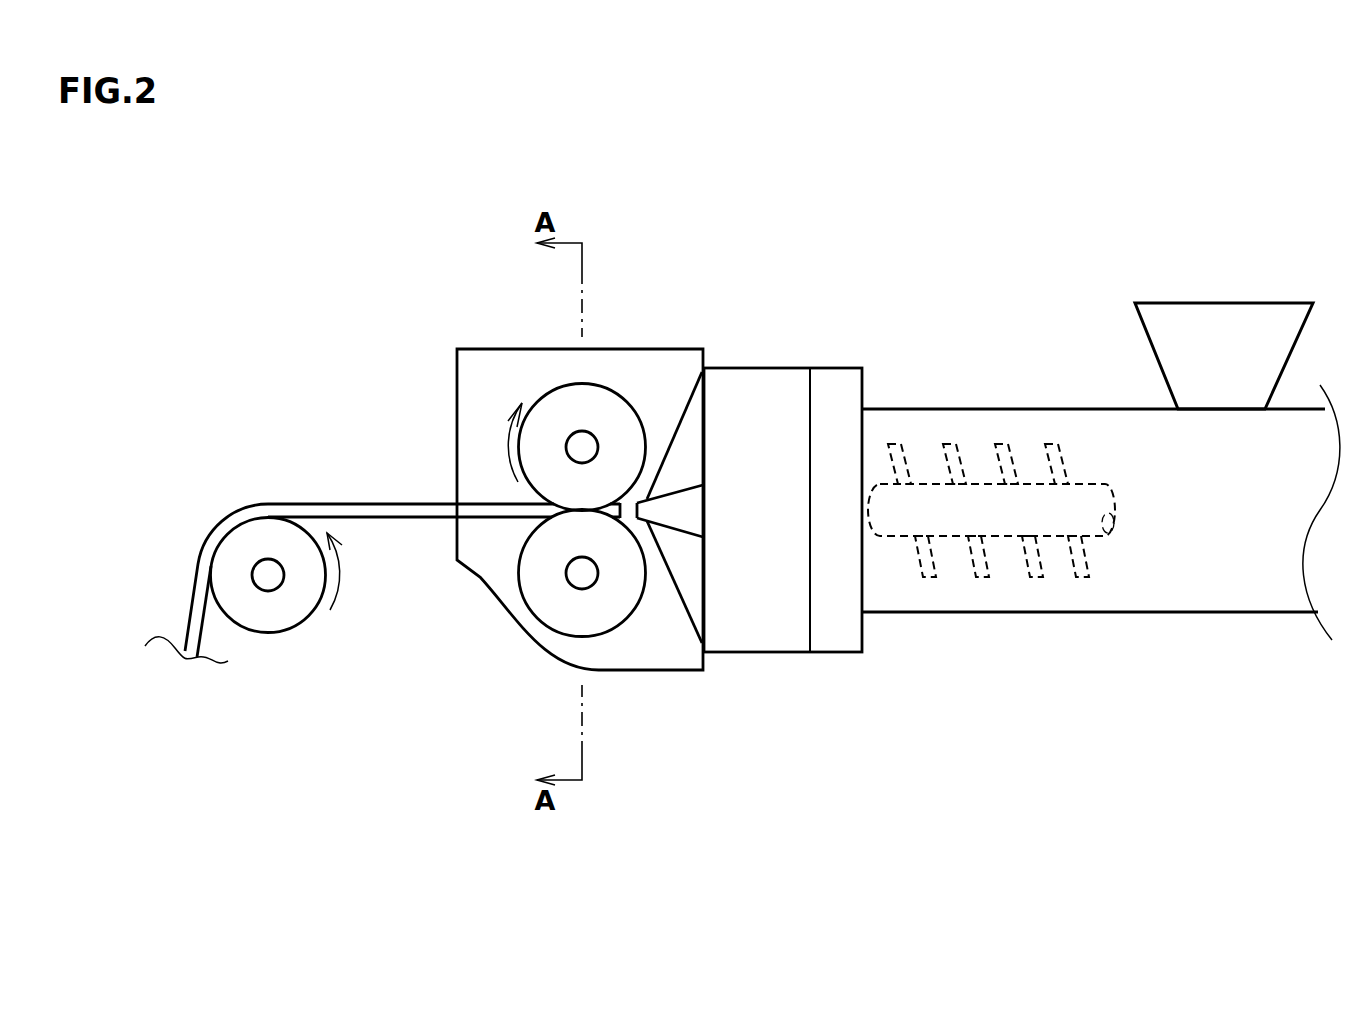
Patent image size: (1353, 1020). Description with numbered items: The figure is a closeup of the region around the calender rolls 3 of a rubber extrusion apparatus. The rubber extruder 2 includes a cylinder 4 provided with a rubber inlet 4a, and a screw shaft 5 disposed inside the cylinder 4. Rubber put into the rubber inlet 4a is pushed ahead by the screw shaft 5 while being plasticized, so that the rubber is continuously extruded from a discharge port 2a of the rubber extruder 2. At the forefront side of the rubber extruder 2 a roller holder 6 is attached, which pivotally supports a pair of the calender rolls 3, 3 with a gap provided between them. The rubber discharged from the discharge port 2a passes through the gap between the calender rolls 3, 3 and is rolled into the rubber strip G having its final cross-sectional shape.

The rubber extruder 2 is at (992, 393).
The discharge port 2a is at (687, 512).
The calender roll 3 is at (552, 417).
The cylinder 4 is at (1033, 408).
The rubber inlet 4a is at (1225, 302).
The screw shaft 5 is at (1052, 525).
The roller holder 6 is at (670, 382).
The rubber strip G is at (285, 505).